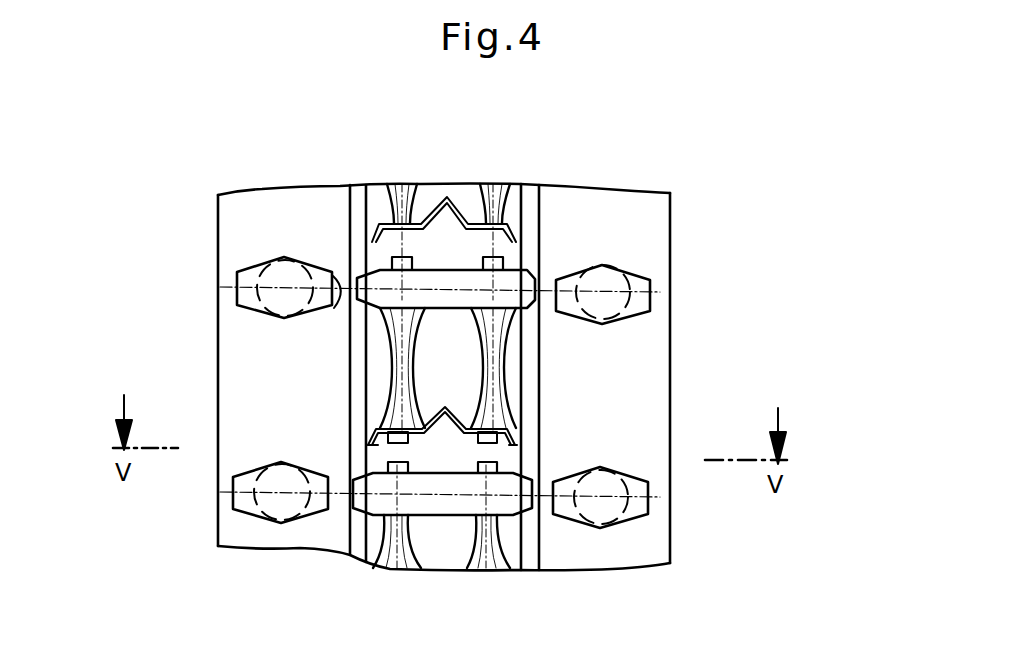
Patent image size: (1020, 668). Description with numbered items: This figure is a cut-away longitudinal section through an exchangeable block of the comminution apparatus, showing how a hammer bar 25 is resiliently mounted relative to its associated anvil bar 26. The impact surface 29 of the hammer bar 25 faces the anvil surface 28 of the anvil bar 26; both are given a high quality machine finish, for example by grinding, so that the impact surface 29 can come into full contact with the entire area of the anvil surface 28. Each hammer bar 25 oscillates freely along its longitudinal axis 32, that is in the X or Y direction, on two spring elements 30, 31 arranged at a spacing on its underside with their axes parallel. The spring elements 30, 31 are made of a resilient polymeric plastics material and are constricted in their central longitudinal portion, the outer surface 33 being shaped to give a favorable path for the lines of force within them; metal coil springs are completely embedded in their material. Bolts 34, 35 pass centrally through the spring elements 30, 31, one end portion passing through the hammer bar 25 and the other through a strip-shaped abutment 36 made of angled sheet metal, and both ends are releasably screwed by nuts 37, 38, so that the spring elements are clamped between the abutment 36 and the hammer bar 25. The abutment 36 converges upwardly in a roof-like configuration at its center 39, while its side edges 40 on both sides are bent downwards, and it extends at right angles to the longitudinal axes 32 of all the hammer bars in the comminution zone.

The hammer bar 25 is at (417, 400).
The anvil bar 26 is at (256, 266).
The anvil surface 28 is at (341, 300).
The impact surface 29 is at (353, 500).
The spring element 30 is at (378, 438).
The spring element 31 is at (493, 350).
The longitudinal axis 32 is at (380, 287).
The outer surface 33 is at (388, 362).
The bolt 34 is at (408, 278).
The bolt 35 is at (508, 283).
The abutment 36 is at (515, 437).
The nut 37 is at (402, 268).
The nut 38 is at (383, 444).
The roof-like center 39 is at (455, 412).
The side edge 40 is at (370, 433).